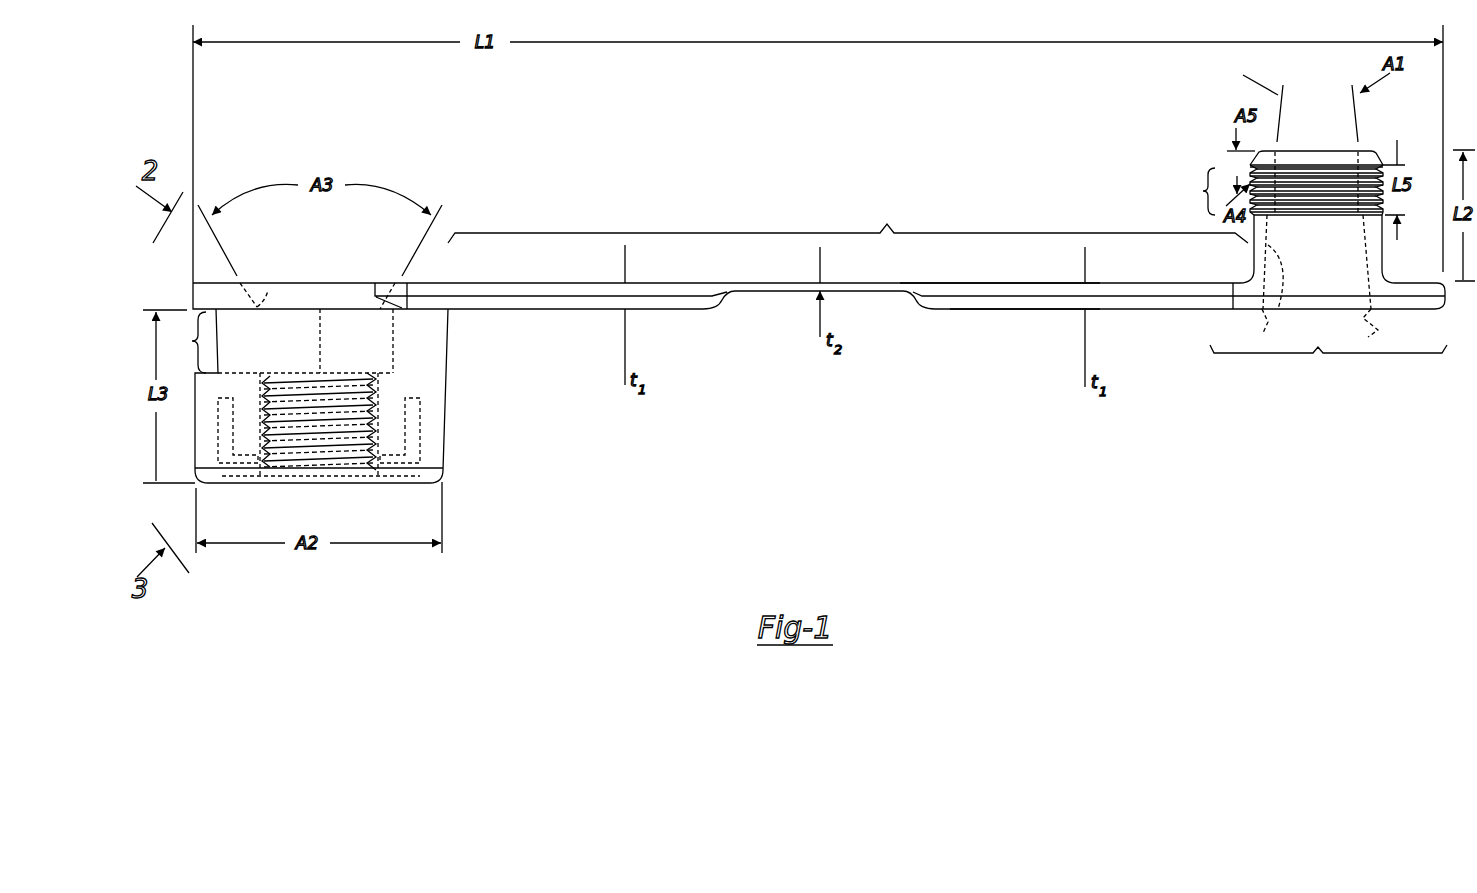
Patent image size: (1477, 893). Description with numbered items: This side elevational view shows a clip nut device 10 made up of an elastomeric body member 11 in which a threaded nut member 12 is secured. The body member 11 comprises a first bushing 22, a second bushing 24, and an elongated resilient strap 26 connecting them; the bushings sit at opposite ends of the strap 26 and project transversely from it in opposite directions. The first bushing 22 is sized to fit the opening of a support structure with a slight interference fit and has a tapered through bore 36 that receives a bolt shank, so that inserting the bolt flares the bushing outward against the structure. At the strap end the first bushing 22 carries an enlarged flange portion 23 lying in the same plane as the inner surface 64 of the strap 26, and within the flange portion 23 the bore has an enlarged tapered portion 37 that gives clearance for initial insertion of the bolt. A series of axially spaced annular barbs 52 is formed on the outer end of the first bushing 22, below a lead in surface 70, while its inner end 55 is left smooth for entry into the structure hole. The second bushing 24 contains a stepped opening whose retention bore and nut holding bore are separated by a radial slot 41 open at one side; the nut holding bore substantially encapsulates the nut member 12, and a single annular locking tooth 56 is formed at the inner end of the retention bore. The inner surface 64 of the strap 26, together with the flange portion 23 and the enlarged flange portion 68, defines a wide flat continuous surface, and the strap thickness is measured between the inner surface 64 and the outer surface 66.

The clip nut device 10 is at (604, 506).
The elastomeric body member 11 is at (1049, 313).
The threaded nut member 12 is at (286, 464).
The first bushing 22 is at (1383, 253).
The flange portion 23 is at (1316, 245).
The second bushing 24 is at (444, 348).
The elongated resilient strap 26 is at (848, 221).
The tapered through bore 36 is at (1273, 249).
The enlarged tapered portion 37 is at (1361, 250).
The radial slot 41 is at (189, 342).
The annular barbs 52 is at (1284, 190).
The inner end 55 is at (1324, 267).
The locking tooth 56 is at (268, 290).
The inner surface 64 is at (1018, 283).
The outer surface 66 is at (1013, 309).
The enlarged flange portion 68 is at (220, 297).
The lead in surface 70 is at (1284, 158).